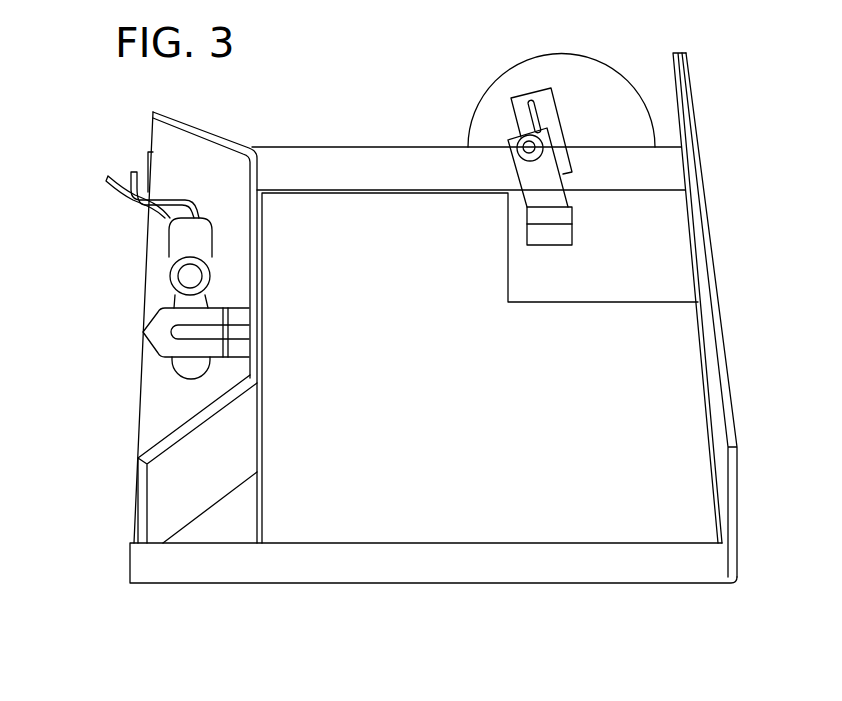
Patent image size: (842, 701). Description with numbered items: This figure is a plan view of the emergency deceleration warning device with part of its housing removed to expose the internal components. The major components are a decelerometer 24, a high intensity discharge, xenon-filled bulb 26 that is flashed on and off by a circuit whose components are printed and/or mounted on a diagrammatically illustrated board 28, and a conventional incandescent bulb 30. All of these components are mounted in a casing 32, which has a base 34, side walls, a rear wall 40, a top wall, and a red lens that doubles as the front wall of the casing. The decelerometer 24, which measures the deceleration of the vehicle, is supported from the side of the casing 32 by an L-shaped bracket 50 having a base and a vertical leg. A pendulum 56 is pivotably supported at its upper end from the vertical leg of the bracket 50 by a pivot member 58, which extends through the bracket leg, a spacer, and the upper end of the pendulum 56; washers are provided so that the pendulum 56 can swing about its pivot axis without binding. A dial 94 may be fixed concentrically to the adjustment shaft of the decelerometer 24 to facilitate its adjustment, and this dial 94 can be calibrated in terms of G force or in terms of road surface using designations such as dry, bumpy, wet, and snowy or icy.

The decelerometer 24 is at (452, 62).
The high intensity discharge, xenon-filled bulb 26 is at (128, 302).
The board 28 is at (407, 388).
The incandescent bulb 30 is at (165, 368).
The casing 32 is at (446, 588).
The base 34 is at (650, 232).
The rear wall 40 is at (718, 287).
The L-shaped bracket 50 is at (566, 112).
The pendulum 56 is at (558, 158).
The pivot member 58 is at (517, 152).
The dial 94 is at (468, 121).